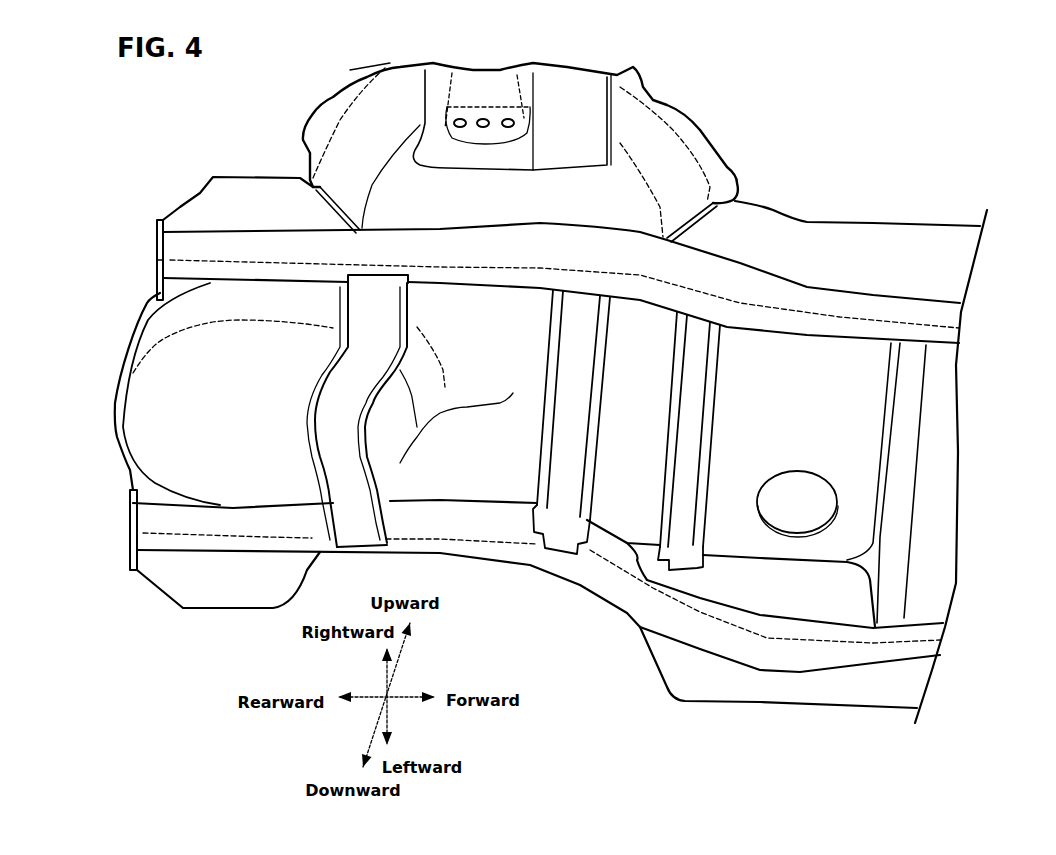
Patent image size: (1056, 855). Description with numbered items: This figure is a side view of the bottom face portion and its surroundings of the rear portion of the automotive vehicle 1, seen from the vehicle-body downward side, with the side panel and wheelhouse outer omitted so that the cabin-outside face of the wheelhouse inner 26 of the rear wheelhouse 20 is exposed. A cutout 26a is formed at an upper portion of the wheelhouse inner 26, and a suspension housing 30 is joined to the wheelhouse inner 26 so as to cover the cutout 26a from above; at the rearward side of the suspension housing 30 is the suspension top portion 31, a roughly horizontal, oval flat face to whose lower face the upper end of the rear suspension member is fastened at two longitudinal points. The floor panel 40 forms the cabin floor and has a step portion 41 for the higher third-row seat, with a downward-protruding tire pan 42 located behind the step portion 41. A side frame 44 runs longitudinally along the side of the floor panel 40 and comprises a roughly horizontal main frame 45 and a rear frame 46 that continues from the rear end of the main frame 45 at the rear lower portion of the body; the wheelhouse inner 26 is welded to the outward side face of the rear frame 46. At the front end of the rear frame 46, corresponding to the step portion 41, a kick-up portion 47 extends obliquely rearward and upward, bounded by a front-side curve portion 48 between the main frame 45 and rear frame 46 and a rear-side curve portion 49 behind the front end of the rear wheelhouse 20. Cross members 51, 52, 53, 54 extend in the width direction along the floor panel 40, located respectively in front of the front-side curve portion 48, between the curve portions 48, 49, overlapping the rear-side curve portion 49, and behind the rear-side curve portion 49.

The automotive vehicle 1 is at (950, 98).
The rear wheelhouse 20 is at (668, 98).
The wheelhouse inner 26 is at (677, 150).
The cutout 26a is at (428, 87).
The suspension housing 30 is at (573, 83).
The suspension top portion 31 is at (493, 117).
The floor panel 40 is at (467, 487).
The step portion 41 is at (617, 522).
The tire pan 42 is at (153, 450).
The side frame 44 is at (833, 337).
The main frame 45 is at (940, 312).
The rear frame 46 is at (253, 242).
The kick-up portion 47 is at (728, 277).
The front-side curve portion 48 is at (802, 287).
The rear-side curve portion 49 is at (607, 243).
The cross member 51 is at (907, 467).
The cross member 52 is at (705, 428).
The cross member 53 is at (578, 403).
The cross member 54 is at (407, 305).